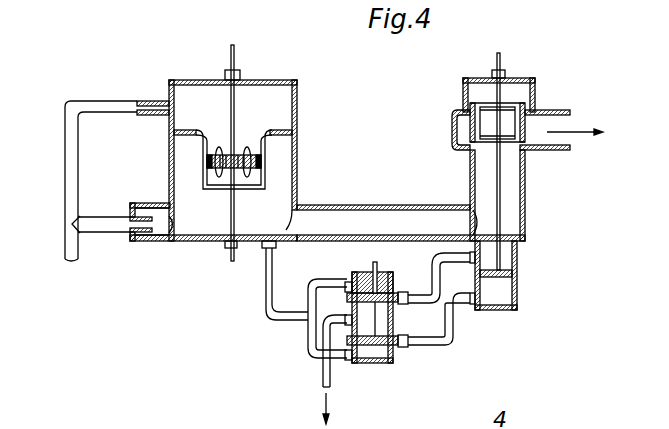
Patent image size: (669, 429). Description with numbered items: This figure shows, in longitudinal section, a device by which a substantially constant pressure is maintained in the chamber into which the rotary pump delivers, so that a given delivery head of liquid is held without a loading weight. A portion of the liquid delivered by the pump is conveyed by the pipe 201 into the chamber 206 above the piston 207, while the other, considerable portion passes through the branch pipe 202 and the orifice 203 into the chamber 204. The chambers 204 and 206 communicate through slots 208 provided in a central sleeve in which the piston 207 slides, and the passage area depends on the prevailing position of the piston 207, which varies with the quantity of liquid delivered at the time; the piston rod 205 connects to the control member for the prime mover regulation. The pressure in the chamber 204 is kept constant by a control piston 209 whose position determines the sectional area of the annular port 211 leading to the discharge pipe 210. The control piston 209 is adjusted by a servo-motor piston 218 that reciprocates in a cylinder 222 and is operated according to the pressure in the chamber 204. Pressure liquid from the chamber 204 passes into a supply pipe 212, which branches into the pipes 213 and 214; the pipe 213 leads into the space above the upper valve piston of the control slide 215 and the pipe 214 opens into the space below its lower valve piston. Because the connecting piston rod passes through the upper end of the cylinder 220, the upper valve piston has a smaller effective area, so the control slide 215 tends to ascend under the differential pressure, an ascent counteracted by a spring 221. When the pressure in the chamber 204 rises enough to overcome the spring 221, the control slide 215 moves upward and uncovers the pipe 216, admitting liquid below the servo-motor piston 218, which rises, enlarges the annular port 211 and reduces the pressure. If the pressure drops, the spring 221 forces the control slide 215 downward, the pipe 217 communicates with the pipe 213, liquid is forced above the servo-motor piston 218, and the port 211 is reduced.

The pipe 201 is at (67, 207).
The branch pipe 202 is at (100, 217).
The orifice 203 is at (180, 236).
The chamber 204 is at (270, 212).
The piston rod 205 is at (236, 93).
The chamber 206 is at (274, 100).
The piston 207 is at (262, 158).
The slots 208 is at (264, 173).
The control piston 209 is at (535, 102).
The discharge pipe 210 is at (563, 125).
The annular port 211 is at (527, 150).
The supply pipe 212 is at (294, 320).
The pipe 213 is at (336, 281).
The pipe 214 is at (316, 360).
The control slide 215 is at (393, 327).
The pipe 216 is at (453, 338).
The pipe 217 is at (434, 283).
The servo-motor piston 218 is at (517, 275).
The cylinder 220 is at (377, 263).
The spring 221 is at (395, 280).
The cylinder 222 is at (517, 300).